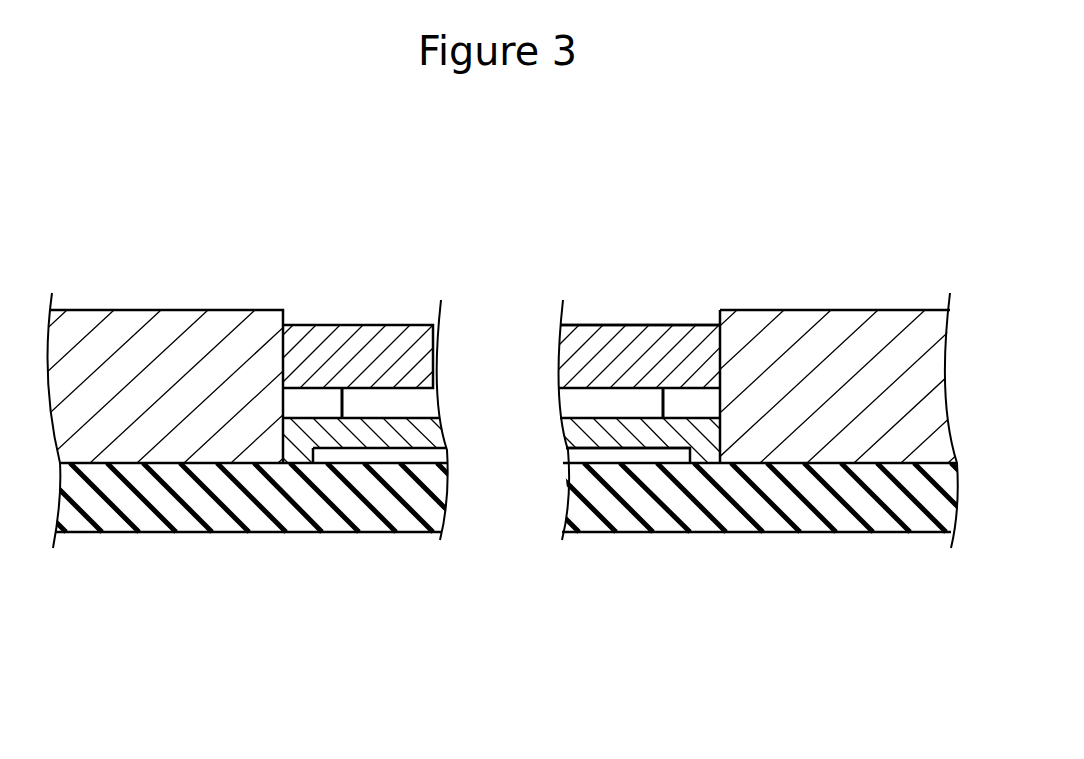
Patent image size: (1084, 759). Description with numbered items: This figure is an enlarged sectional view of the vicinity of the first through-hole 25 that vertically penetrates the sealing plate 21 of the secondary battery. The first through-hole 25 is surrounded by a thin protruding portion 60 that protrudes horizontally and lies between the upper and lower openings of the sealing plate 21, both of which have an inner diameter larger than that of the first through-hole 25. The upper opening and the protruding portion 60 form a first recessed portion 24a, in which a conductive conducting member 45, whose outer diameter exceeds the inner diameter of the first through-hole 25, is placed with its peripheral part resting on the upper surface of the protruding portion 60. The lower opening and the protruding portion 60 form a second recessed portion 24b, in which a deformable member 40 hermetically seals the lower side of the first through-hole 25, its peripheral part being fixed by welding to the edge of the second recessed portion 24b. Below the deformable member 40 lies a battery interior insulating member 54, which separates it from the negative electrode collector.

The sealing plate 21 is at (845, 322).
The first recessed portion 24a is at (291, 382).
The second recessed portion 24b is at (294, 426).
The first through-hole 25 is at (663, 313).
The deformable member 40 is at (614, 430).
The conducting member 45 is at (598, 333).
The battery interior insulating member 54 is at (847, 515).
The protruding portion 60 is at (346, 402).